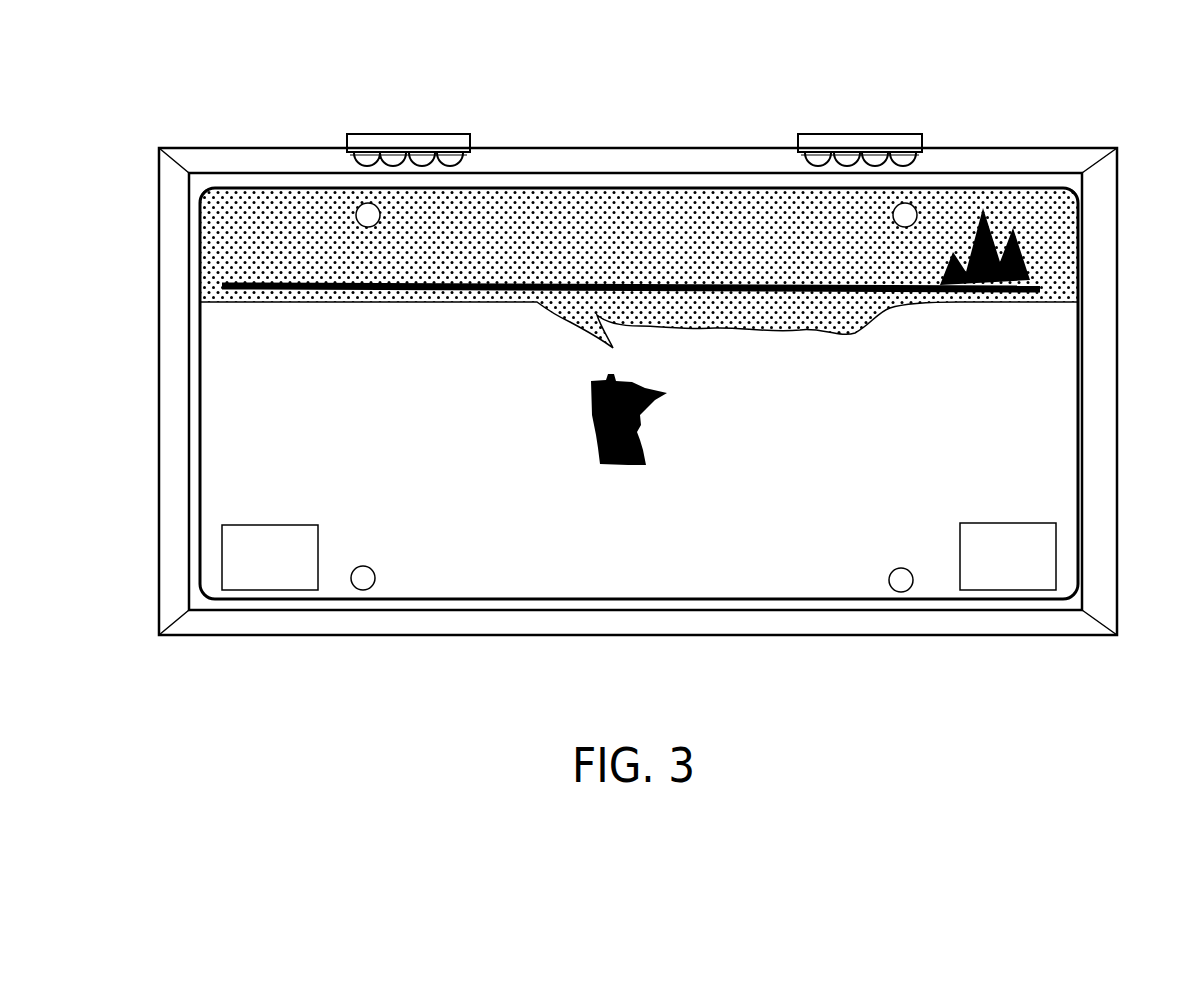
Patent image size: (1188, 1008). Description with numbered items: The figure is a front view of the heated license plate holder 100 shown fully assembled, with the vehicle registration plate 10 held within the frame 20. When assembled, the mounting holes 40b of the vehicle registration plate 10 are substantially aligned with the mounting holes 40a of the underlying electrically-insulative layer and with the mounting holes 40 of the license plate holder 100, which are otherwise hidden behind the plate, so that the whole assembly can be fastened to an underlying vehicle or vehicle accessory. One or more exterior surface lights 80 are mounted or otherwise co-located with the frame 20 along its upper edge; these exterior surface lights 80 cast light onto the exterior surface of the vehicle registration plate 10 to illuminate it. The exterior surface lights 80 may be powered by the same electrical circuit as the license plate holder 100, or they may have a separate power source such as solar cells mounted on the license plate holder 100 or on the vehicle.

The license plate holder 100 is at (583, 361).
The frame 20 is at (240, 148).
The vehicle registration plate 10 is at (225, 381).
The exterior surface lights 80 is at (418, 134).
The mounting holes 40 is at (738, 445).
The mounting holes 40a is at (636, 215).
The mounting holes 40b is at (363, 578).